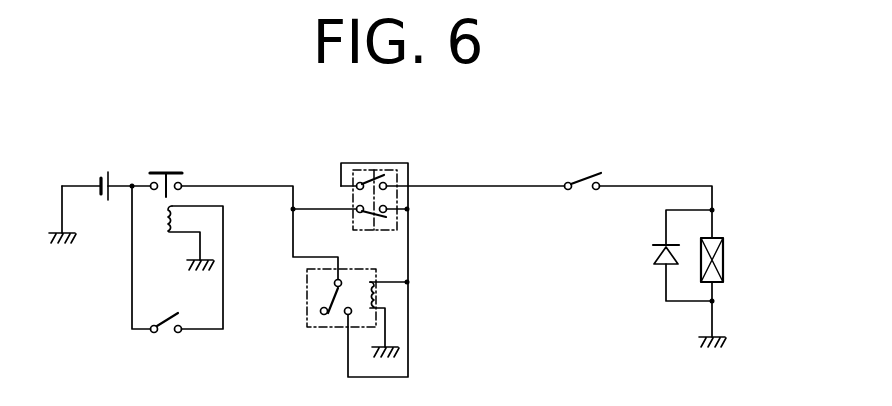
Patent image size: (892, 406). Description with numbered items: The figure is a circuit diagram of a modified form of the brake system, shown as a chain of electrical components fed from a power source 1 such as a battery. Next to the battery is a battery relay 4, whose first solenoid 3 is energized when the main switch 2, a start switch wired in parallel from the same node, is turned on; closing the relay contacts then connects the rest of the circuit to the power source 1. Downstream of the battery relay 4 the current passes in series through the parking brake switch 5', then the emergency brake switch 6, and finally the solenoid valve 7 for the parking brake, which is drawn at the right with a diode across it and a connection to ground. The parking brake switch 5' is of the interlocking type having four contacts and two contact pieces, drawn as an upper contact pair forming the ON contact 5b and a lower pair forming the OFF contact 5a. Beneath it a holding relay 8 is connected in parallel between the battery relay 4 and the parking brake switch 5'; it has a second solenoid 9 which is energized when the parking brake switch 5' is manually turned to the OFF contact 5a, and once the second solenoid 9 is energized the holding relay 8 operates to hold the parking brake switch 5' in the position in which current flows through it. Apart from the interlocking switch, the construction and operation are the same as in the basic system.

The power source 1 is at (106, 159).
The main switch 2 is at (169, 340).
The first solenoid 3 is at (166, 224).
The battery relay 4 is at (169, 160).
The parking brake switch 5' is at (375, 168).
The OFF contact 5a is at (388, 207).
The ON contact 5b is at (387, 179).
The emergency brake switch 6 is at (584, 202).
The solenoid valve 7 is at (736, 246).
The holding relay 8 is at (326, 339).
The second solenoid 9 is at (372, 298).